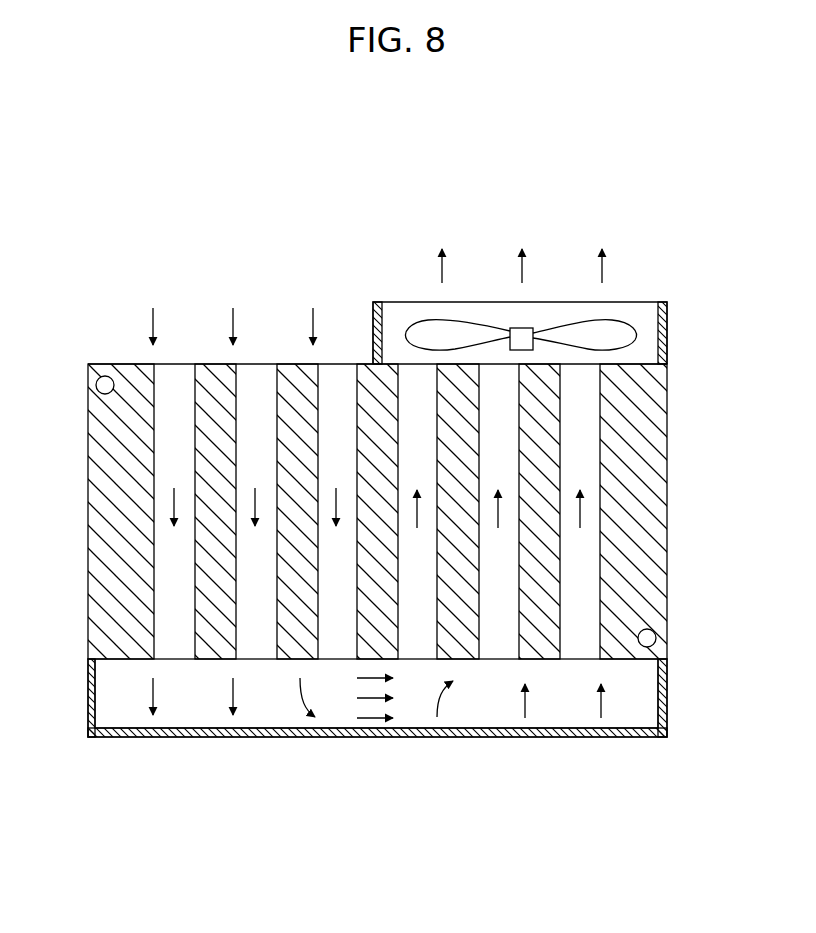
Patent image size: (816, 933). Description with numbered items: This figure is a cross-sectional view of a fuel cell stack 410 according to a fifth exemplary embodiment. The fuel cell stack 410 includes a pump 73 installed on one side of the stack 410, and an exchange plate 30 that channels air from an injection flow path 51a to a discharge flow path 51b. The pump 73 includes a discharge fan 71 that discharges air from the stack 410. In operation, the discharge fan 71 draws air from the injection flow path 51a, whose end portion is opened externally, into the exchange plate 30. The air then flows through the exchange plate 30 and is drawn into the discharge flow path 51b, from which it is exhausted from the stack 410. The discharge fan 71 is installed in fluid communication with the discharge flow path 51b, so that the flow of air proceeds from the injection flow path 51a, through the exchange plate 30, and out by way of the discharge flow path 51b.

The fuel cell stack 410 is at (394, 184).
The injection flow path 51a is at (173, 579).
The discharge flow path 51b is at (580, 583).
The discharge fan 71 is at (626, 340).
The pump 73 is at (680, 308).
The exchange plate 30 is at (656, 703).